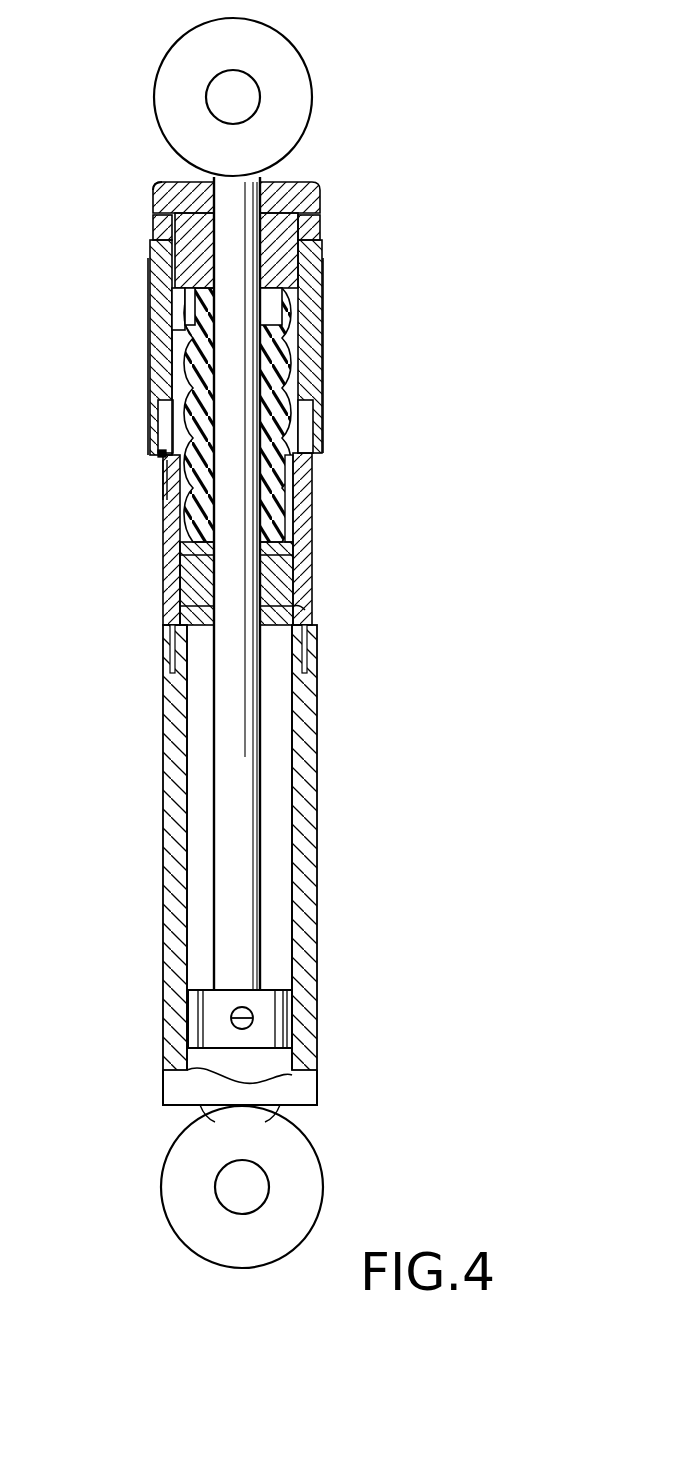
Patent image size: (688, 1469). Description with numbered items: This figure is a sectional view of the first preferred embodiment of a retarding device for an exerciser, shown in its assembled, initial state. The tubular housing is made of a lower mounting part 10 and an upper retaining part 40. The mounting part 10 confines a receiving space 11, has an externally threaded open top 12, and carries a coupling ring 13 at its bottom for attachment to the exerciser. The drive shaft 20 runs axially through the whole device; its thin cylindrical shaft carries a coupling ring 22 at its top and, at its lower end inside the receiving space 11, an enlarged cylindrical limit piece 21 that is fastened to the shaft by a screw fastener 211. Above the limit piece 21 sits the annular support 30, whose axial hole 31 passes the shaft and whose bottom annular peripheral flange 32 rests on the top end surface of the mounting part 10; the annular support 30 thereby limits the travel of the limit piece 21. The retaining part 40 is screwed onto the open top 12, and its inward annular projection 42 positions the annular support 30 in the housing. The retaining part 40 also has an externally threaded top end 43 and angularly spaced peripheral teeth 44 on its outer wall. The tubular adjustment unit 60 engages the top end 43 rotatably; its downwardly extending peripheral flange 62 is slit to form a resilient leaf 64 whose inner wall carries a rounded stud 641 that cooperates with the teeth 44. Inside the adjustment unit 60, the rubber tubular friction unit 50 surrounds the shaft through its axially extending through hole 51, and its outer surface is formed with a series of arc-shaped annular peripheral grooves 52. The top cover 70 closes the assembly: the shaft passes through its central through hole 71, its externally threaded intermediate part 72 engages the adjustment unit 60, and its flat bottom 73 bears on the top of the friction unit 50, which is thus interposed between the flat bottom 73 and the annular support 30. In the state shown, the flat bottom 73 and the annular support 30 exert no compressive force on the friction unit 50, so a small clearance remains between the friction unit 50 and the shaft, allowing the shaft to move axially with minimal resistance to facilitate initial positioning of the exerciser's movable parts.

The mounting part 10 is at (372, 771).
The receiving space 11 is at (283, 722).
The open top 12 is at (308, 650).
The coupling ring 13 is at (292, 1150).
The drive shaft 20 is at (250, 853).
The limit piece 21 is at (290, 1030).
The screw fastener 211 is at (245, 1014).
The coupling ring 22 is at (290, 125).
The annular support 30 is at (272, 579).
The axial hole 31 is at (290, 553).
The annular peripheral flange 32 is at (302, 606).
The retaining part 40 is at (313, 497).
The inward annular projection 42 is at (178, 571).
The top end 43 is at (170, 373).
The peripheral teeth 44 is at (163, 478).
The tubular friction unit 50 is at (283, 362).
The axially extending through hole 51 is at (292, 300).
The annular peripheral grooves 52 is at (308, 462).
The tubular adjustment unit 60 is at (322, 268).
The peripheral flange 62 is at (305, 410).
The resilient leaf 64 is at (157, 419).
The rounded stud 641 is at (158, 452).
The top cover 70 is at (298, 200).
The central through hole 71 is at (153, 193).
The intermediate part 72 is at (153, 228).
The flat bottom 73 is at (172, 313).